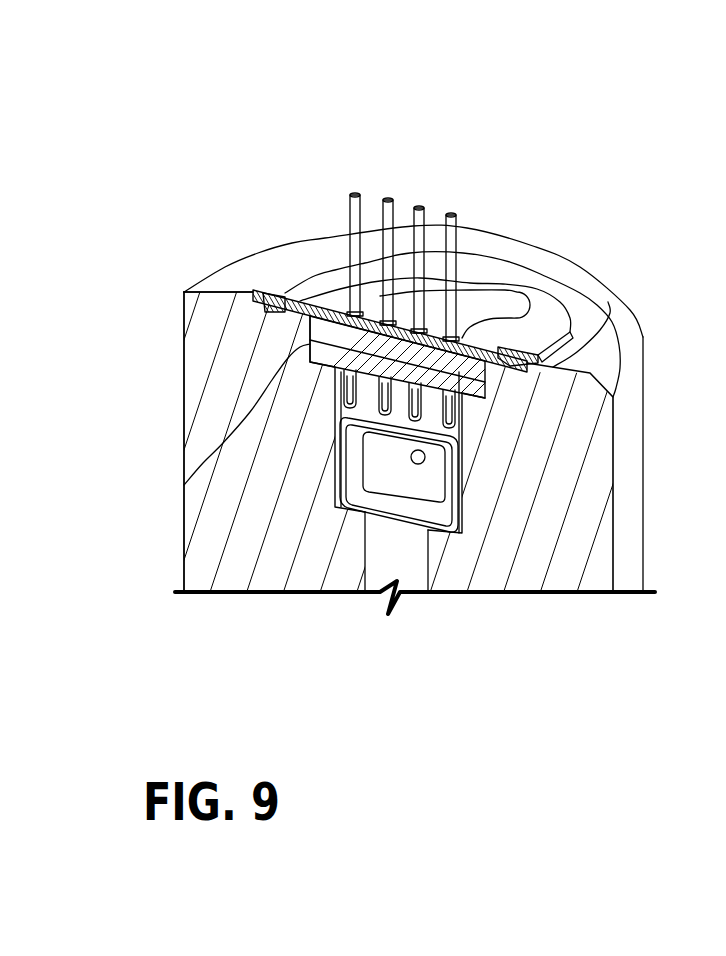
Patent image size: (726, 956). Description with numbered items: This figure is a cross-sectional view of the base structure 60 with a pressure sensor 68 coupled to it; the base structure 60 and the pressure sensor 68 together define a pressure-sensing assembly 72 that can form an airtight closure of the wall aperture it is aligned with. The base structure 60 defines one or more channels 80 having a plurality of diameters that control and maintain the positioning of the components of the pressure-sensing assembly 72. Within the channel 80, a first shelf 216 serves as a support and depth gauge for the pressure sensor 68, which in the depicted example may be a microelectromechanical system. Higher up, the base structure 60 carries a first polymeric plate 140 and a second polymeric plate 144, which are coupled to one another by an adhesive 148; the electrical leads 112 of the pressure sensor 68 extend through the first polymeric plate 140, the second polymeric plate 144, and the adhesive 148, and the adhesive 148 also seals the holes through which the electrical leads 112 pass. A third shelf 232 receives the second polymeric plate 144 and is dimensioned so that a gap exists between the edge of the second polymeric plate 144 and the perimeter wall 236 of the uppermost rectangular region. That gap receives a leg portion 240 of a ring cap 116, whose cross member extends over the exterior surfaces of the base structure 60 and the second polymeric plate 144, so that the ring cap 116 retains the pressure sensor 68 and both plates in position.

The base structure 60 is at (208, 148).
The pressure sensor 68 is at (466, 501).
The pressure-sensing assembly 72 is at (180, 400).
The channel 80 is at (377, 572).
The electrical leads 112 is at (388, 197).
The ring cap 116 is at (302, 255).
The first polymeric plate 140 is at (503, 365).
The second polymeric plate 144 is at (490, 320).
The adhesive 148 is at (184, 485).
The first shelf 216 is at (337, 510).
The third shelf 232 is at (297, 320).
The perimeter wall 236 is at (237, 290).
The leg portion 240 is at (183, 296).